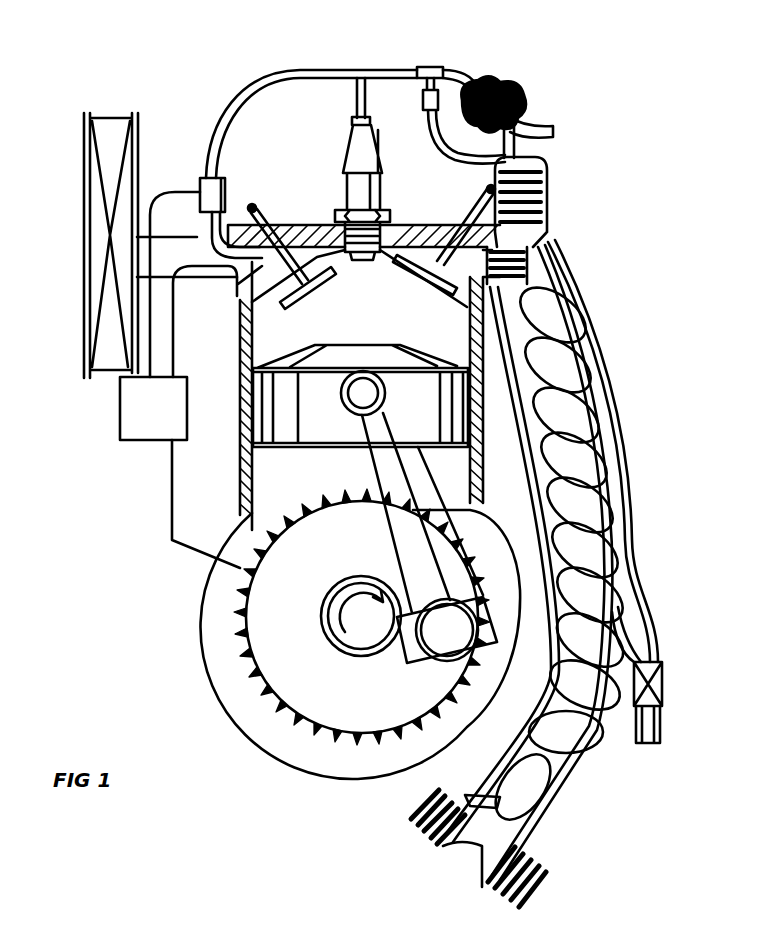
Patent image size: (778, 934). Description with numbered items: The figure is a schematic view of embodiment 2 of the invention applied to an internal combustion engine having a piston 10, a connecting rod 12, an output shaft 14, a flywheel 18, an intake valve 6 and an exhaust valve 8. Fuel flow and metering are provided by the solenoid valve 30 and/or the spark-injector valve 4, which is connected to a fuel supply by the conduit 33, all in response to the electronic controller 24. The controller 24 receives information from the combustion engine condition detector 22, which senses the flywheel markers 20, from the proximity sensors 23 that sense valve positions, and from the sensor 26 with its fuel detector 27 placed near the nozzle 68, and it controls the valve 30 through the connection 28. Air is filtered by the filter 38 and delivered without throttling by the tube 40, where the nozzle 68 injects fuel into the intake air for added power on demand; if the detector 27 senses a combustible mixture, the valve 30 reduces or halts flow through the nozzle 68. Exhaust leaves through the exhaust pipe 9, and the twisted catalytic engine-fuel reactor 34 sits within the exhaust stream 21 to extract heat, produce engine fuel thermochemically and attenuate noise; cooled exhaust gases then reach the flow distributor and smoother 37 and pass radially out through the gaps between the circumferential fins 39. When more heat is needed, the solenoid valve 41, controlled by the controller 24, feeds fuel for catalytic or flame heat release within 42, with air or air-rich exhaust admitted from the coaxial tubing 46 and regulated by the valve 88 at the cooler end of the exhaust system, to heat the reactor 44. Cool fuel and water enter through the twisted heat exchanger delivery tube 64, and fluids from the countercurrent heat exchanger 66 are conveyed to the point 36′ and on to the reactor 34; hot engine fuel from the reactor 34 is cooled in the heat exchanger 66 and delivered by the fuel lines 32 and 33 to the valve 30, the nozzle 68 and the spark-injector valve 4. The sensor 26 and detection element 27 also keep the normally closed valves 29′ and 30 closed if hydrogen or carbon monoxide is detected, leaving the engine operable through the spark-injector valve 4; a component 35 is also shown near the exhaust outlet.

The embodiment 2 is at (266, 38).
The spark-injector valve 4 is at (355, 152).
The intake valve 6 is at (268, 208).
The exhaust valve 8 is at (486, 200).
The exhaust pipe 9 is at (590, 765).
The piston 10 is at (470, 400).
The connecting rod 12 is at (480, 508).
The output shaft 14 is at (318, 611).
The flywheel 18 is at (275, 681).
The flywheel markers 20 is at (290, 745).
The exhaust stream 21 is at (543, 254).
The combustion engine condition detector 22 is at (235, 567).
The proximity sensors 23 is at (278, 216).
The electronic controller 24 is at (125, 418).
The sensor 26 is at (180, 345).
The fuel detector 27 is at (240, 293).
The connection 28 is at (200, 190).
The exhaust valve rotator 29′ is at (450, 218).
The solenoid valve 30 is at (226, 186).
The fuel line 32 is at (247, 97).
The conduit 33 is at (357, 100).
The engine-fuel reactor 34 is at (548, 320).
The exhaust flap 35 is at (475, 794).
The point 36′ is at (545, 122).
The flow distributor and smoother 37 is at (462, 850).
The filter 38 is at (95, 208).
The circumferential fins 39 is at (522, 895).
The tube 40 is at (163, 238).
The solenoid valve 41 is at (423, 98).
The heater 42 is at (550, 194).
The reactor 44 is at (542, 164).
The coaxial tubing 46 is at (598, 356).
The heat exchanger delivery tube 64 is at (505, 85).
The countercurrent heat exchanger 66 is at (480, 60).
The nozzle 68 is at (237, 223).
The valve 88 is at (662, 686).